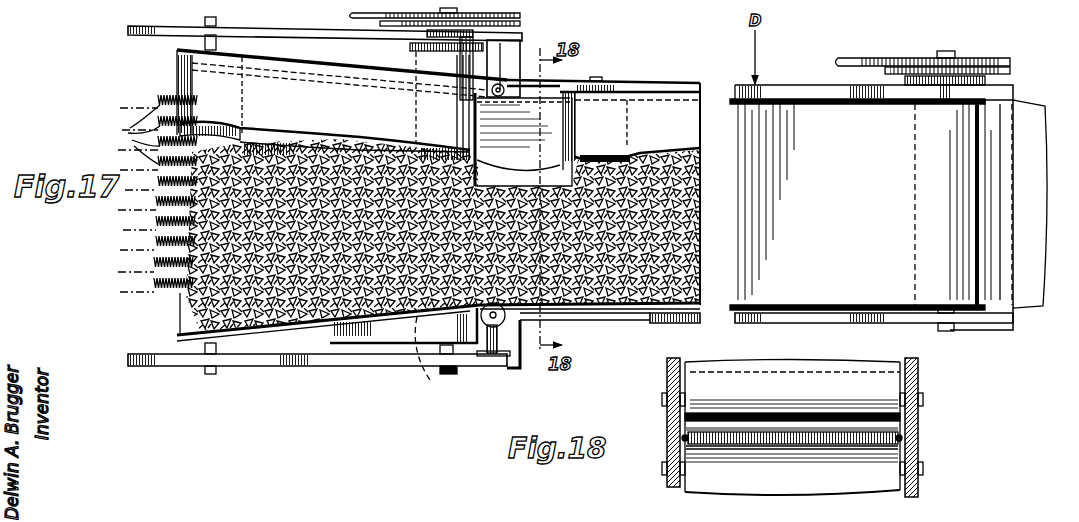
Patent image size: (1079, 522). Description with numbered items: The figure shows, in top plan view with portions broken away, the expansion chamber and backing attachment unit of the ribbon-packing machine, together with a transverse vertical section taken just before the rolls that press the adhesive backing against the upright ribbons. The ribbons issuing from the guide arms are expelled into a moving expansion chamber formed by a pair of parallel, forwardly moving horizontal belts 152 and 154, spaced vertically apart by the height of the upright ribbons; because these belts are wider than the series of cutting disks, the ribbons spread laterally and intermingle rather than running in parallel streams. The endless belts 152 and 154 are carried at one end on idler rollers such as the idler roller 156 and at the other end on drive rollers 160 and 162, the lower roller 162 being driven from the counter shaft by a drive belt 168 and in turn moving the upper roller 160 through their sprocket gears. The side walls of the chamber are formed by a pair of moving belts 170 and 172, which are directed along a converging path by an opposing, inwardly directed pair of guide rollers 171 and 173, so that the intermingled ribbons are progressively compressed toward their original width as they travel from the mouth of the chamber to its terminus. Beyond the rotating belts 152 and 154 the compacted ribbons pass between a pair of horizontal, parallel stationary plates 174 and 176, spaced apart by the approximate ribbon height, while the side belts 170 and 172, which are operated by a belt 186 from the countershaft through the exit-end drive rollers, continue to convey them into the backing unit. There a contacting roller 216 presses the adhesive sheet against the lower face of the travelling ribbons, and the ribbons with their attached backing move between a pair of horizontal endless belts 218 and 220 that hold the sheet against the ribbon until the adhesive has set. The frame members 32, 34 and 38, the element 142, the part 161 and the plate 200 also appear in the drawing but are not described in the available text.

In FIG. 17, the upper frame bar 32 is at (230, 27).
In FIG. 18, the upper frame bar 32 is at (664, 422).
In FIG. 17, the lower frame bar 34 is at (268, 358).
In FIG. 18, the lower frame bar 34 is at (922, 431).
In FIG. 17, the frame member 38 is at (1016, 101).
In FIG. 17, the springs 142 is at (142, 193).
In FIG. 17, the horizontal belt 152 is at (342, 118).
In FIG. 17, the horizontal belt 154 is at (440, 236).
In FIG. 17, the idler roller 156 is at (233, 128).
In FIG. 17, the drive roller 160 is at (480, 148).
In FIG. 17, the bracket 161 is at (492, 43).
In FIG. 17, the drive roller 162 is at (439, 356).
In FIG. 17, the drive belt 168 is at (350, 15).
In FIG. 17, the moving side belt 170 is at (516, 74).
In FIG. 18, the moving side belt 170 is at (686, 441).
In FIG. 17, the guide roller 171 is at (512, 86).
In FIG. 17, the moving side belt 172 is at (185, 333).
In FIG. 18, the moving side belt 172 is at (921, 441).
In FIG. 17, the guide roller 173 is at (497, 356).
In FIG. 17, the stationary plate 174 is at (524, 141).
In FIG. 18, the stationary plate 174 is at (902, 424).
In FIG. 18, the stationary plate 176 is at (903, 440).
In FIG. 17, the belt 186 is at (842, 60).
In FIG. 18, the side plate 200 is at (882, 396).
In FIG. 18, the contacting roller 216 is at (905, 497).
In FIG. 17, the endless belt 218 is at (892, 204).
In FIG. 18, the endless belt 218 is at (792, 426).
In FIG. 18, the endless belt 220 is at (792, 486).